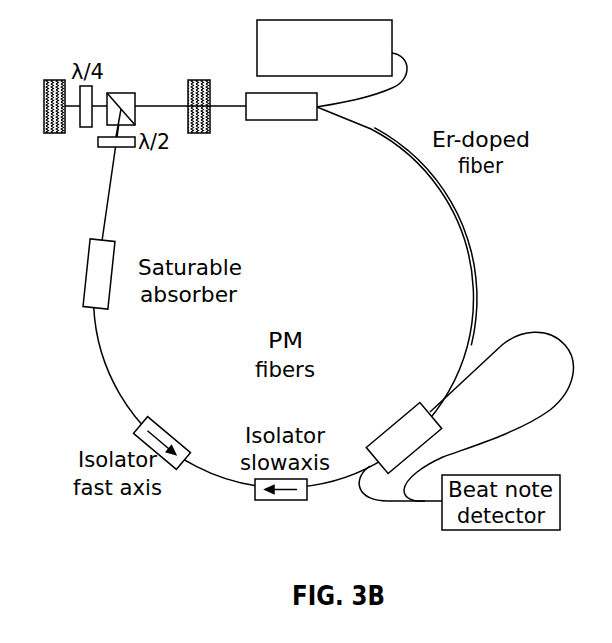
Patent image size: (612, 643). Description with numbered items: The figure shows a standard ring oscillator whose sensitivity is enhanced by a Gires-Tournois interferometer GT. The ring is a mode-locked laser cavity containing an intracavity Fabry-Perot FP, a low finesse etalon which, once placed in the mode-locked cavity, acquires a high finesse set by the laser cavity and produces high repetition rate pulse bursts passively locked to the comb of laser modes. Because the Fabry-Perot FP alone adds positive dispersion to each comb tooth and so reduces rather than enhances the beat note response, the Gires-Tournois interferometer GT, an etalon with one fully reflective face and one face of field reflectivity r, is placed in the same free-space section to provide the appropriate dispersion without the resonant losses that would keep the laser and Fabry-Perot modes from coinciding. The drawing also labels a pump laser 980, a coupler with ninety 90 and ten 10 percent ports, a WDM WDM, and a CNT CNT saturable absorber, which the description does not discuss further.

The pump laser (980 nm) 980 is at (332, 63).
The 90% output port of 90/10 coupler 90 is at (408, 416).
The 10% output port loop to beat note detector 10 is at (488, 416).
The Gires-Tournois interferometer GT is at (53, 93).
The Fabry-Perot FP is at (200, 93).
The wavelength division multiplexer WDM is at (281, 107).
The carbon nanotube saturable absorber CNT is at (99, 274).